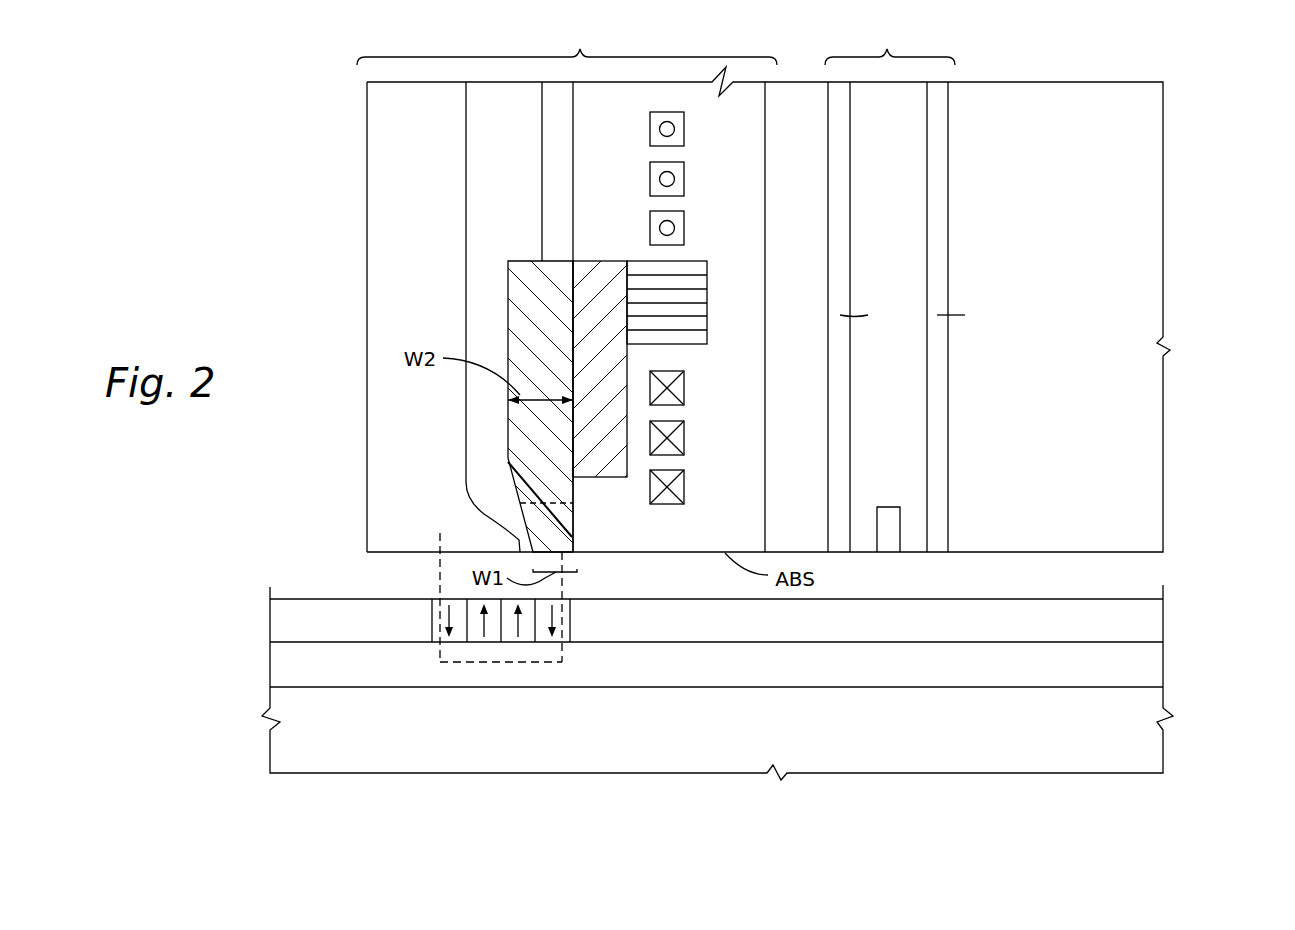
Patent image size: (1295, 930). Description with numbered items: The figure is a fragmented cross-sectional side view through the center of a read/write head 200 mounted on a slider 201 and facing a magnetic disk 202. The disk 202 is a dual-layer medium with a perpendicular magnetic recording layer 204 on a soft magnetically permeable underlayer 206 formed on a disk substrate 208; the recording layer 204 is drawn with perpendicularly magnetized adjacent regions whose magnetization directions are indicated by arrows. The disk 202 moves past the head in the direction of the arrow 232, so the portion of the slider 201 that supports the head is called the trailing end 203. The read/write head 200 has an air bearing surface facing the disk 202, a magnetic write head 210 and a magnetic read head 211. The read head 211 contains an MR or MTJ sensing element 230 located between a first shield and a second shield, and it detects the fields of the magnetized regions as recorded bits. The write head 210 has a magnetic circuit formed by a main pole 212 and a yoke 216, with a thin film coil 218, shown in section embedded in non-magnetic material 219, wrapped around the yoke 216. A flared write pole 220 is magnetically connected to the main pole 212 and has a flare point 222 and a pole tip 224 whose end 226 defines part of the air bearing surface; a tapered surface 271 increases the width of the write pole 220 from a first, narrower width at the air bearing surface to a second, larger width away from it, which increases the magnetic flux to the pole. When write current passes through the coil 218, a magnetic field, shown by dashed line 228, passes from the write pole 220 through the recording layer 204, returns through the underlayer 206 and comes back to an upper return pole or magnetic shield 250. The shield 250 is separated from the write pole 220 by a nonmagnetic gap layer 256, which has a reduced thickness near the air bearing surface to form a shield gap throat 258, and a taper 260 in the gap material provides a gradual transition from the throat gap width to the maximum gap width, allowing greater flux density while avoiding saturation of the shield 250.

The read/write head 200 is at (226, 71).
The slider 201 is at (1163, 183).
The magnetic disk 202 is at (1192, 711).
The trailing end 203 is at (336, 293).
The recording layer 204 is at (1153, 623).
The underlayer 206 is at (1153, 666).
The disk substrate 208 is at (1153, 747).
The magnetic write head 210 is at (567, 41).
The magnetic read head 211 is at (880, 285).
The main pole 212 is at (590, 268).
The yoke 216 is at (700, 262).
The thin film coil 218 is at (695, 102).
The non-magnetic material 219 is at (587, 163).
The write pole 220 is at (524, 268).
The flare point 222 is at (508, 462).
The pole tip 224 is at (568, 520).
The end 226 is at (573, 552).
The magnetic field 228 is at (440, 576).
The sensing element 230 is at (882, 508).
The arrow 232 is at (200, 664).
The upper return pole 250 is at (376, 175).
The nonmagnetic gap layer 256 is at (476, 302).
The shield gap throat 258 is at (527, 537).
The taper 260 is at (470, 499).
The tapered surface 271 is at (520, 502).